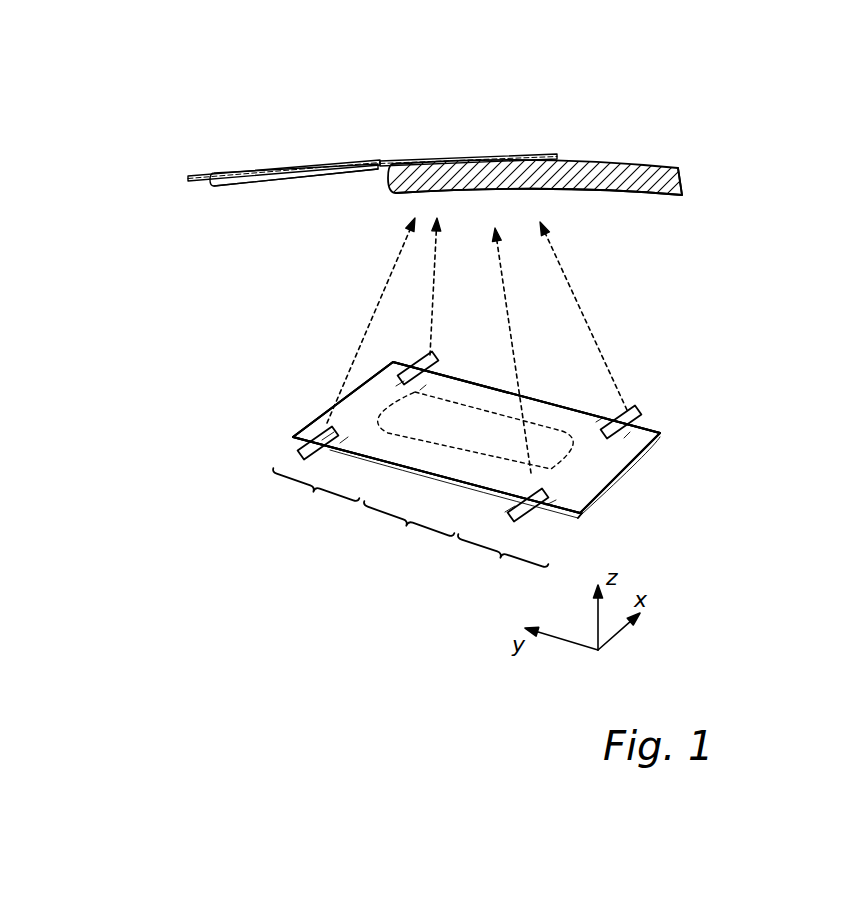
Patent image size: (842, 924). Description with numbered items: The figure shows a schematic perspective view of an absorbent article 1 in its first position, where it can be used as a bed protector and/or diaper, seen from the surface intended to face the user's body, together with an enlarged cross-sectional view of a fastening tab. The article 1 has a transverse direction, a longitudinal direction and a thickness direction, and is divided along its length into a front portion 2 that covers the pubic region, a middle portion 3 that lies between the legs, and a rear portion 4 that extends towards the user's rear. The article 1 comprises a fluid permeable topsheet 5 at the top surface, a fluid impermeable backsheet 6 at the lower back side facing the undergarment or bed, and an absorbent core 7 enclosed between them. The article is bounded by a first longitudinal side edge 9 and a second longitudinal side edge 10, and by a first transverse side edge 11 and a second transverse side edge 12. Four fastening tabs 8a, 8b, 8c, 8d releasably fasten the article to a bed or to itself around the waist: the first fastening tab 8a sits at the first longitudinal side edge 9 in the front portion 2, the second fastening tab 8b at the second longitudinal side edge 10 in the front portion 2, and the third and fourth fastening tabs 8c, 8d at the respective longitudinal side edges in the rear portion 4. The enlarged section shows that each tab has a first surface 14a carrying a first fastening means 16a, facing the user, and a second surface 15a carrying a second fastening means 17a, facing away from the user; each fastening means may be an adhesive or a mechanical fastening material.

The absorbent article 1 is at (668, 87).
The front portion 2 is at (316, 495).
The middle portion 3 is at (409, 528).
The rear portion 4 is at (503, 560).
The fluid permeable topsheet 5 is at (635, 163).
The fluid impermeable backsheet 6 is at (640, 194).
The absorbent core 7 is at (683, 183).
The first fastening tab 8a is at (312, 440).
The second fastening tab 8b is at (437, 352).
The third fastening tab 8c is at (583, 506).
The fourth fastening tab 8d is at (634, 408).
The first longitudinal side edge 9 is at (447, 480).
The second longitudinal side edge 10 is at (575, 410).
The first transverse side edge 11 is at (629, 461).
The second transverse side edge 12 is at (358, 387).
The first surface 14a is at (382, 162).
The second surface 15a is at (386, 180).
The first fastening means 16a is at (262, 172).
The second fastening means 17a is at (240, 186).